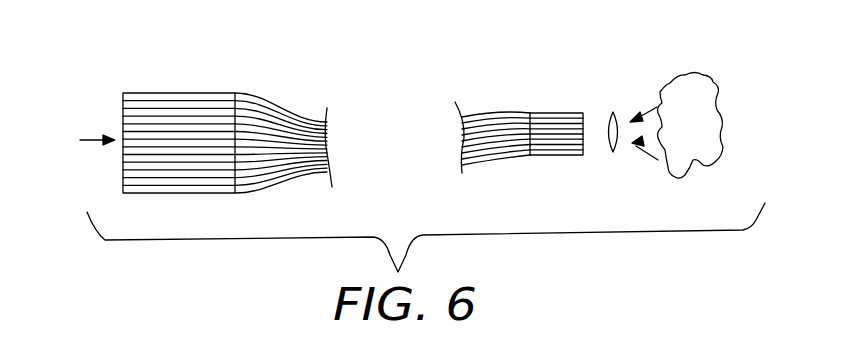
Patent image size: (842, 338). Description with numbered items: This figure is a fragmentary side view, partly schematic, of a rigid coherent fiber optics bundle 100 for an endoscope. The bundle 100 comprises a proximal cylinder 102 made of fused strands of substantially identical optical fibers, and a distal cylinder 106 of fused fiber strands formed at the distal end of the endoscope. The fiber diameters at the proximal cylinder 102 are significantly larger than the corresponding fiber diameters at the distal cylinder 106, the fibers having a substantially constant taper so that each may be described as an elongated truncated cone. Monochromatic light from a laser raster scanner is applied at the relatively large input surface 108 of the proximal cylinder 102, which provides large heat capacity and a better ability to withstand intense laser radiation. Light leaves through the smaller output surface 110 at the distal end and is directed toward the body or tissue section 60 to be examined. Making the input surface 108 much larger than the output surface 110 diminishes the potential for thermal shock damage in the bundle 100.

The rigid coherent fiber optics bundle 100 is at (421, 85).
The proximal cylinder 102 is at (177, 107).
The distal cylinder 106 is at (558, 120).
The input surface 108 is at (123, 120).
The output surface 110 is at (587, 146).
The tissue section 60 is at (695, 162).